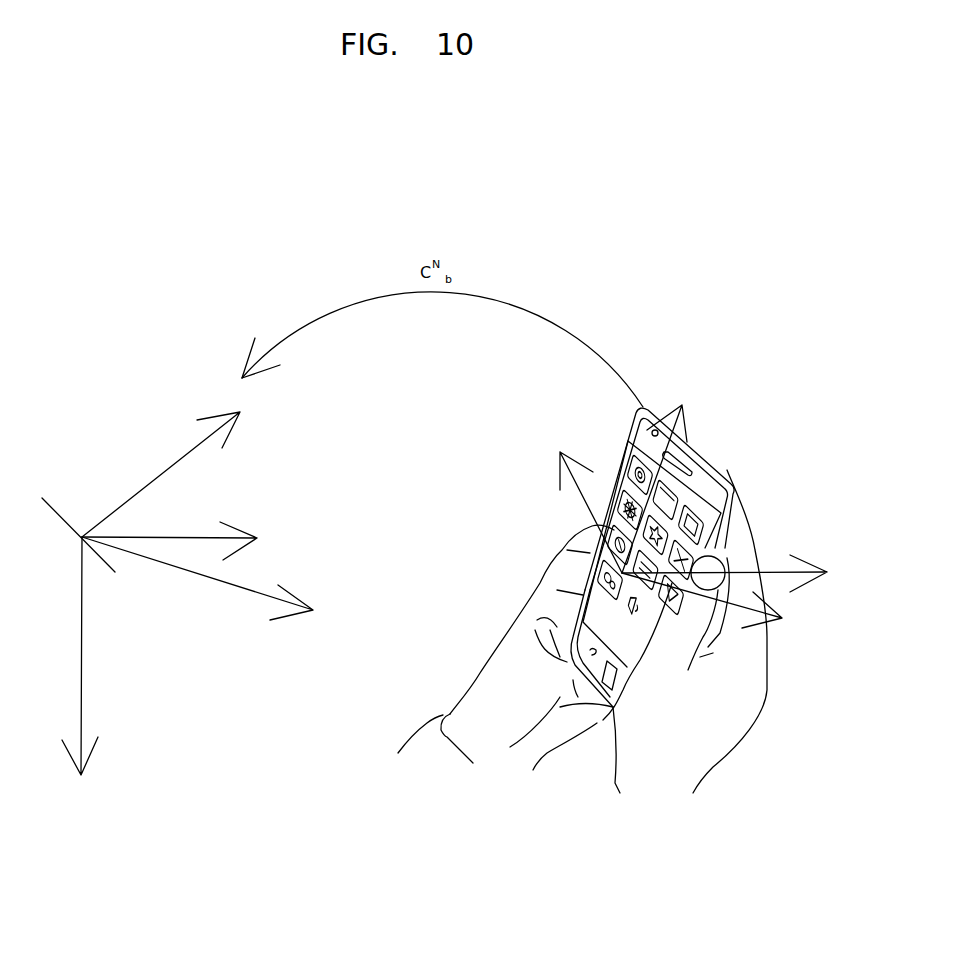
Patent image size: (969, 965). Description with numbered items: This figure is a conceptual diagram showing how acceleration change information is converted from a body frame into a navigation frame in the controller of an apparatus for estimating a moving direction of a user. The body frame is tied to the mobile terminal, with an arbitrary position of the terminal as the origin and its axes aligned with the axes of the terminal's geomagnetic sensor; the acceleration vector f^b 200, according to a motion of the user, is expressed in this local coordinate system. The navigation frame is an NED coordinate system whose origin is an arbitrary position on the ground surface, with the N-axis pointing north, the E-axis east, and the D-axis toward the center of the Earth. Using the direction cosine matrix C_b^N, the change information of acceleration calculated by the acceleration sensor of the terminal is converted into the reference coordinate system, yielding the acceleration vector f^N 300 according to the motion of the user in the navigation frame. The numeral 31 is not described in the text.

The acceleration vector f^N 300 is at (246, 522).
The acceleration vector f^b 200 is at (808, 562).
The calendar icon 31 is at (666, 499).